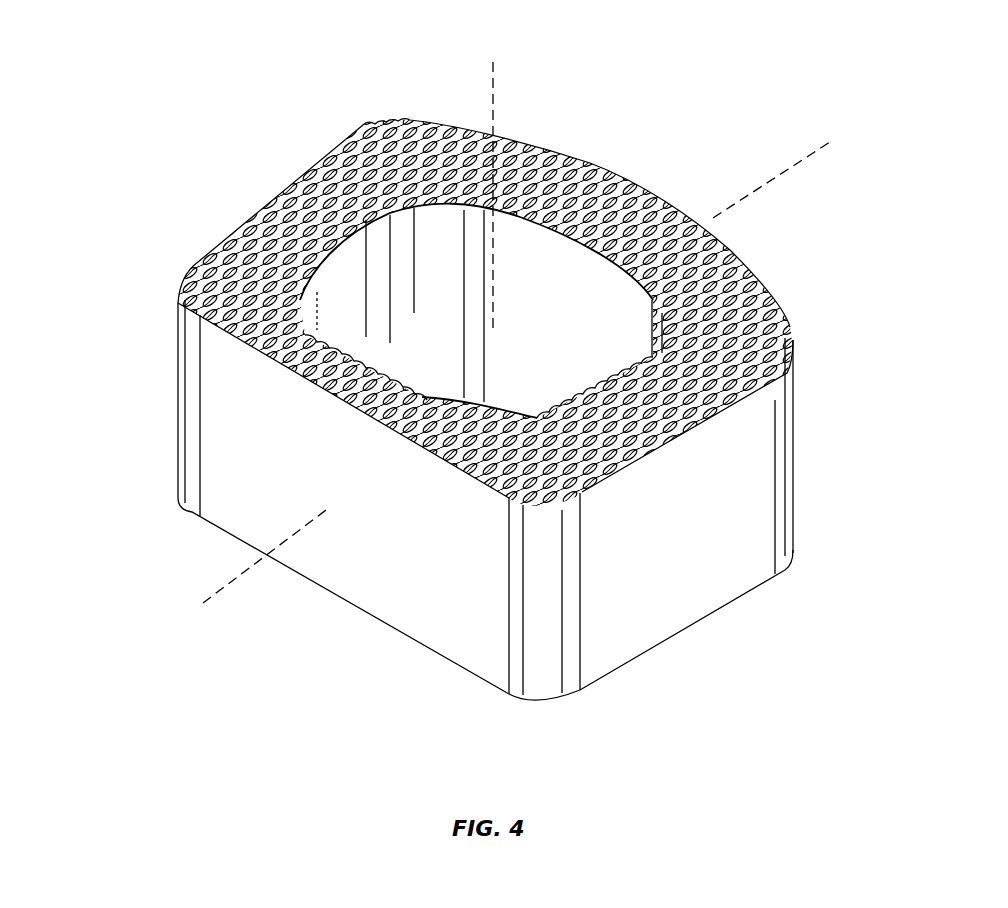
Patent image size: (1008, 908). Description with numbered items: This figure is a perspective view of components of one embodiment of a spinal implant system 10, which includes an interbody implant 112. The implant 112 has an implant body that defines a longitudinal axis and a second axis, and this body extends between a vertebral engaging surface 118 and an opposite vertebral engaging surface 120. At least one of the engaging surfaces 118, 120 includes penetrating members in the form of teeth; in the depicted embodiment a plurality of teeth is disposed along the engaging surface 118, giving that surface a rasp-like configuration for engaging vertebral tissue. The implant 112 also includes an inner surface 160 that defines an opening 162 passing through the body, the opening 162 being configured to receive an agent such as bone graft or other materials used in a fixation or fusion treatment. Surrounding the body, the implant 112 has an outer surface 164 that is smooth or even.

The spinal implant system 10 is at (140, 137).
The interbody implant 112 is at (838, 395).
The vertebral engaging surface 118 is at (710, 370).
The vertebral engaging surface 120 is at (667, 640).
The inner surface 160 is at (337, 288).
The opening 162 is at (407, 273).
The outer surface 164 is at (233, 497).